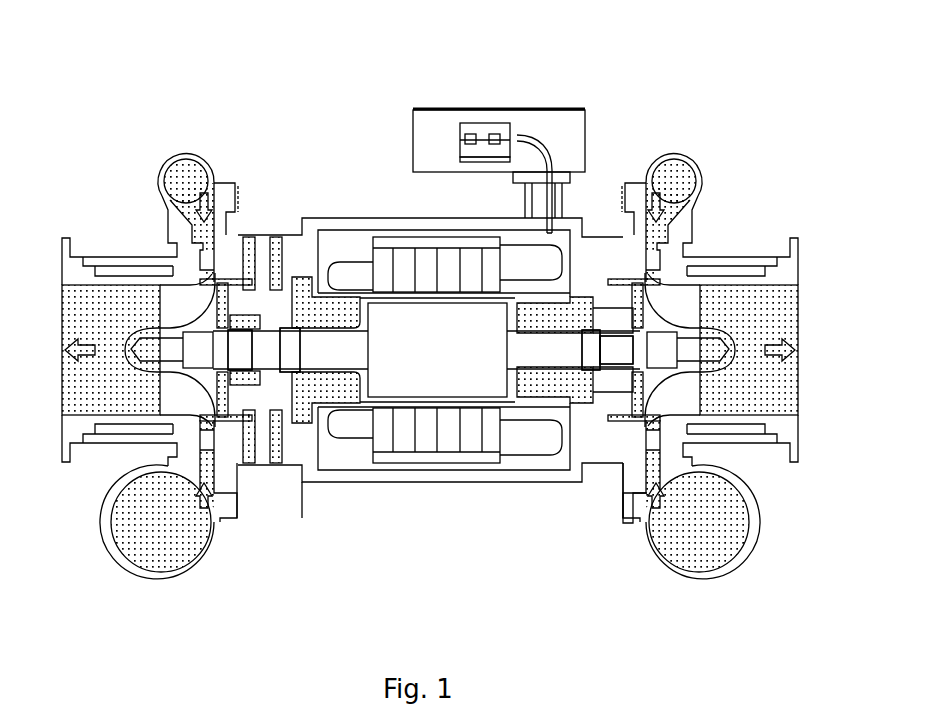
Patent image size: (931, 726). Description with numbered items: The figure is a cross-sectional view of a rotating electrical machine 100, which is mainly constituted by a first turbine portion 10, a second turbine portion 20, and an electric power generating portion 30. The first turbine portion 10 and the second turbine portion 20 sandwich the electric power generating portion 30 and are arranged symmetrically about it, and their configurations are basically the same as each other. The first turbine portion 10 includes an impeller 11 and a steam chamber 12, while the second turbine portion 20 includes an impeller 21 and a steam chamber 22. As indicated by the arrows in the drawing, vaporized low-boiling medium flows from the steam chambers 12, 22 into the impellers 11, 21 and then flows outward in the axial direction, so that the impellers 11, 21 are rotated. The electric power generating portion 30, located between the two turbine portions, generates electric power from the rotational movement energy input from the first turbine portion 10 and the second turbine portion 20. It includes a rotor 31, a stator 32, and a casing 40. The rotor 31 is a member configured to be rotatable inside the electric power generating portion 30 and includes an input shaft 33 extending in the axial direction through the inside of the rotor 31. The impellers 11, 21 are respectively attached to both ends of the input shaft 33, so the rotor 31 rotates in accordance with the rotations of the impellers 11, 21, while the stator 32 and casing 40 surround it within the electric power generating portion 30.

The rotating electrical machine 100 is at (430, 339).
The first turbine portion 10 is at (157, 398).
The impeller 11 is at (176, 297).
The steam chamber 12 is at (180, 173).
The second turbine portion 20 is at (703, 399).
The impeller 21 is at (683, 300).
The steam chamber 22 is at (677, 173).
The electric power generating portion 30 is at (430, 347).
The rotor 31 is at (465, 387).
The stator 32 is at (388, 258).
The input shaft 33 is at (323, 360).
The casing 40 is at (350, 218).